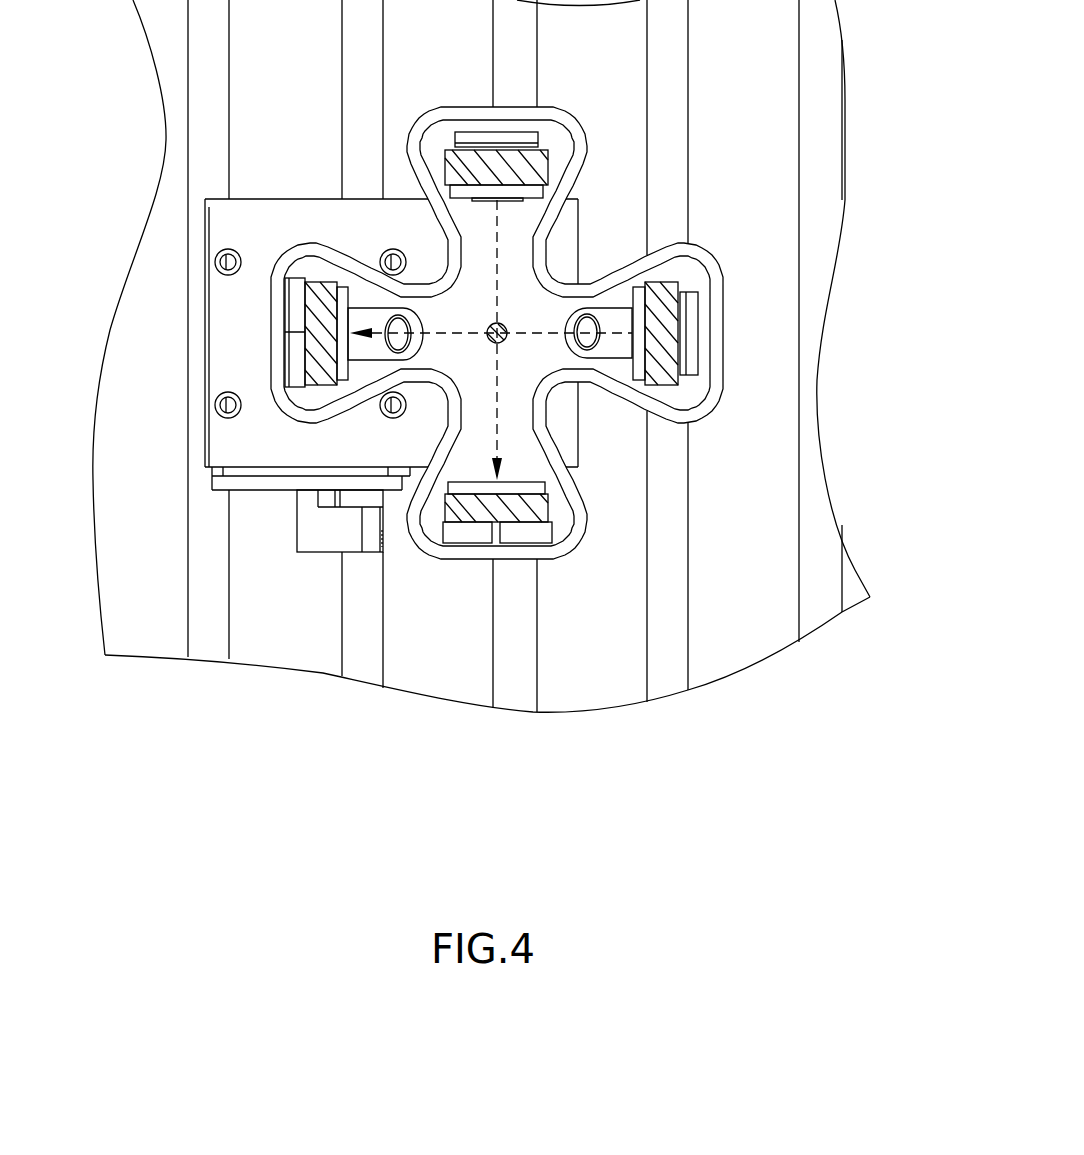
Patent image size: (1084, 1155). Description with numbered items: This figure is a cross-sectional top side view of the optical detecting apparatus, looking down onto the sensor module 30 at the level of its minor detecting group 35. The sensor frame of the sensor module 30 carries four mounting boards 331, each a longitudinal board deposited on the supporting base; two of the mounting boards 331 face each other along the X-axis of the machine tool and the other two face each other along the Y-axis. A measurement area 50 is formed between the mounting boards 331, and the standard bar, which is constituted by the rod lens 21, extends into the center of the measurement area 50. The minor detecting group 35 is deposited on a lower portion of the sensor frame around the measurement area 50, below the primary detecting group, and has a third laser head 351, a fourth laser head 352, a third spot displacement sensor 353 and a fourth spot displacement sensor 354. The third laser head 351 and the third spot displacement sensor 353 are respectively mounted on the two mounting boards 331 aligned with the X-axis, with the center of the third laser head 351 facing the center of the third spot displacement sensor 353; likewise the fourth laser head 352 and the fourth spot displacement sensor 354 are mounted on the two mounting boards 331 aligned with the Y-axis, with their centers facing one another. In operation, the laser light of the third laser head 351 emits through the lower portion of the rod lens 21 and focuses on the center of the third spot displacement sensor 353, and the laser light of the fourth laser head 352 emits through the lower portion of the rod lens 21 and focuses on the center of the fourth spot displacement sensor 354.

The rod lens 21 is at (505, 342).
The sensor module 30 is at (318, 572).
The minor detecting group 35 is at (752, 337).
The measurement area 50 is at (480, 314).
The mounting boards 331 is at (665, 292).
The third laser head 351 is at (632, 343).
The fourth laser head 352 is at (540, 217).
The third spot displacement sensor 353 is at (358, 312).
The fourth spot displacement sensor 354 is at (520, 463).